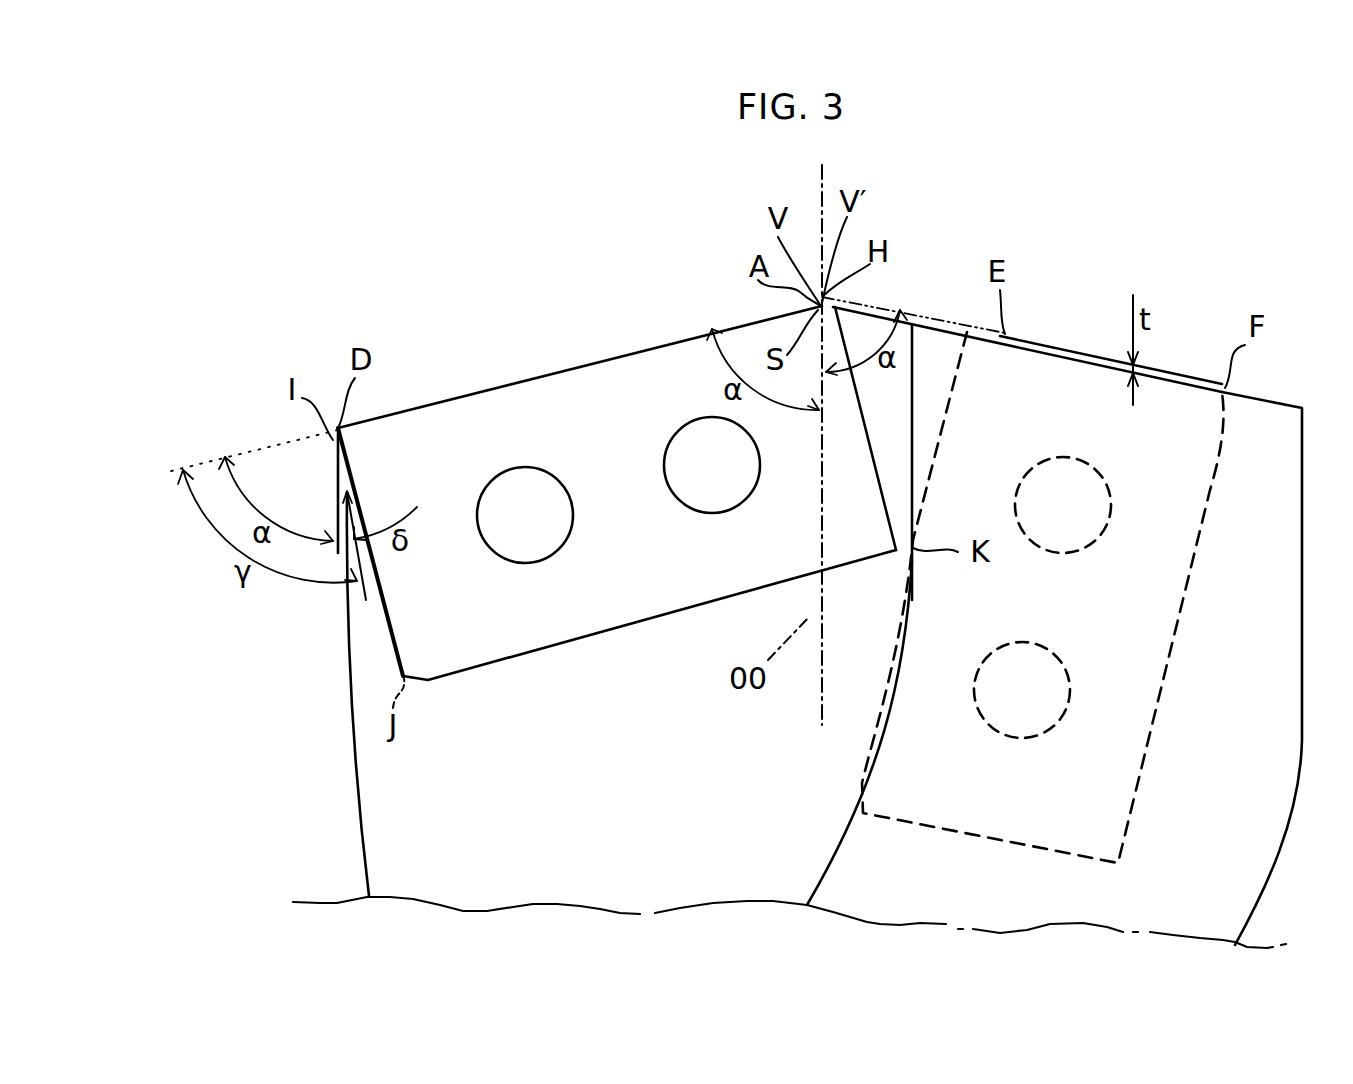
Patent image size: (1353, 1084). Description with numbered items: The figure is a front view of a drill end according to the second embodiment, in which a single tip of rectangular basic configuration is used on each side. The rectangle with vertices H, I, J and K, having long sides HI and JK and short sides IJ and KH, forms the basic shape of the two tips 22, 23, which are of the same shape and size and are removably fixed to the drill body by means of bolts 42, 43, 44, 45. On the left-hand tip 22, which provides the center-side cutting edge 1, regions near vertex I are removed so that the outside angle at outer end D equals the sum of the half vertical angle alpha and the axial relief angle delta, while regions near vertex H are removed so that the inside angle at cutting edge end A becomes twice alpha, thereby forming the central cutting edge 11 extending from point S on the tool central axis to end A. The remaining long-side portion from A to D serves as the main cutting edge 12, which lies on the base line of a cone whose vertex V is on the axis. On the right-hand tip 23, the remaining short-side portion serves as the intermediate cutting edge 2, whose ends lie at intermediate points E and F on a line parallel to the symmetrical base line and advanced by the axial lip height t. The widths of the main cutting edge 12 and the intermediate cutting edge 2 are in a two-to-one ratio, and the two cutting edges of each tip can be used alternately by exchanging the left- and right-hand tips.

The center-side cutting edge 1 is at (537, 197).
The central cutting edge 11 is at (755, 316).
The main cutting edge 12 is at (535, 374).
The intermediate cutting edge 2 is at (1070, 346).
The tip 22 is at (645, 618).
The tip 23 is at (1148, 757).
The bolt 42 is at (535, 563).
The bolt 43 is at (725, 512).
The bolt 44 is at (1110, 516).
The bolt 45 is at (1070, 690).